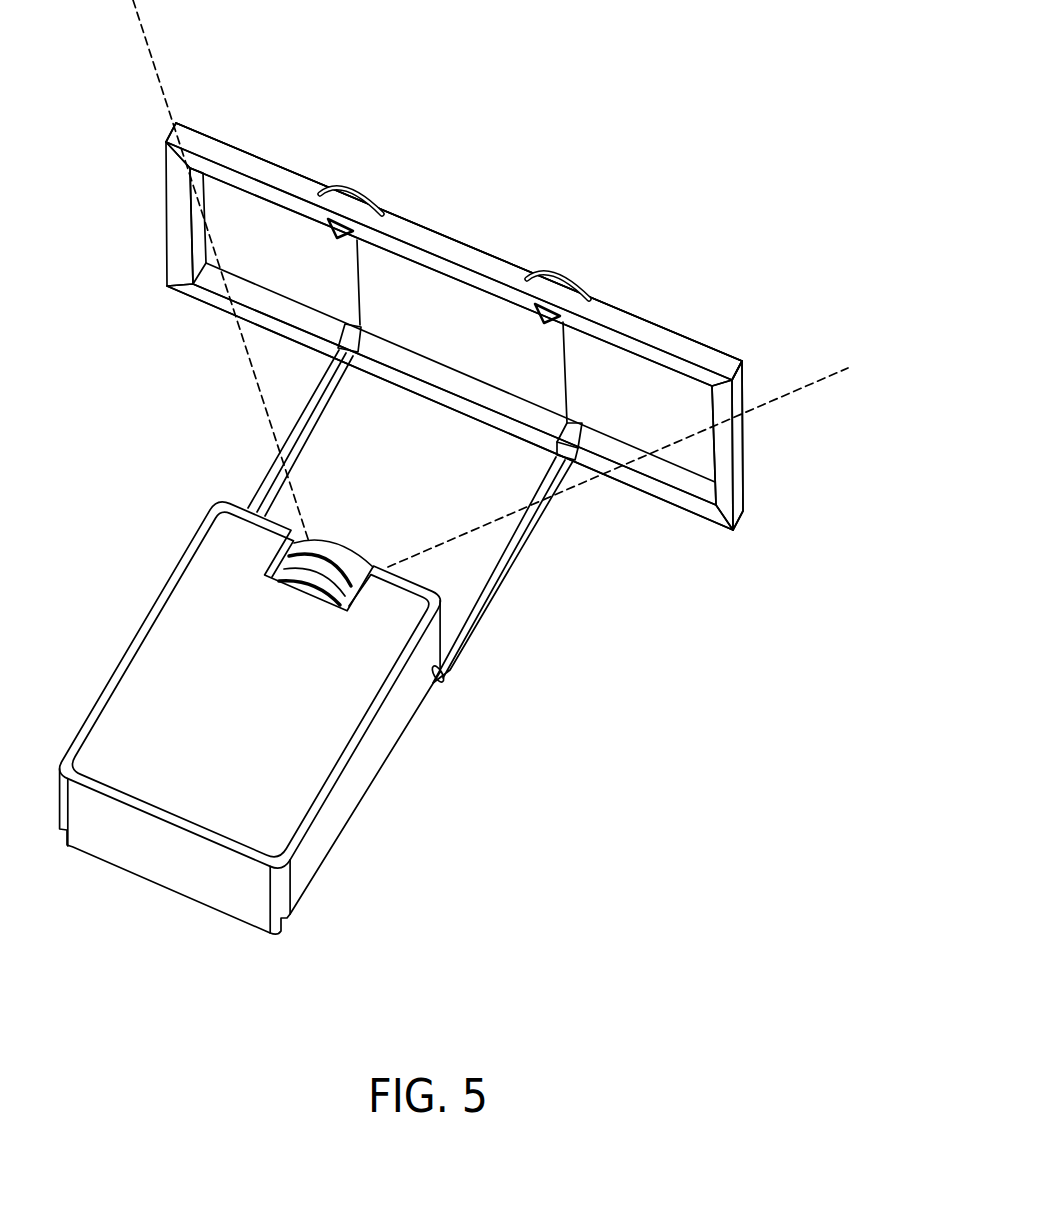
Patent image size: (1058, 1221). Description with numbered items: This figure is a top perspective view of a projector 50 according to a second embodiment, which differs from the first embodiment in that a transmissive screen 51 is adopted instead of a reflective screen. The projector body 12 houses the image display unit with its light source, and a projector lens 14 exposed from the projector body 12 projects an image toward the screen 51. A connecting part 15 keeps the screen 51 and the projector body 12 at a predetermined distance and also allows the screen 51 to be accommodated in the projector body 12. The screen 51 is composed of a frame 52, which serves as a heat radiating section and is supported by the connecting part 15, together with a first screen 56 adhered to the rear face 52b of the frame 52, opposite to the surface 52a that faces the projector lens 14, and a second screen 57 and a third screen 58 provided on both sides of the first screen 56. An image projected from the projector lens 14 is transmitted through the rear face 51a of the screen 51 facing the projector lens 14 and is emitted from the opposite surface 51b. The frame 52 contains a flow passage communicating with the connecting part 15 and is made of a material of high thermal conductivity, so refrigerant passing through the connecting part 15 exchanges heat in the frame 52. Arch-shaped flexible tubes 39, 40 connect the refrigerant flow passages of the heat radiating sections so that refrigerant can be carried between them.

The projector 50 is at (529, 76).
The frame 52 is at (168, 124).
The surface 52a is at (178, 205).
The rear face 52b is at (248, 148).
The transmissive screen 51 is at (478, 248).
The rear face 51a is at (230, 226).
The surface 51b is at (421, 218).
The third screen 58 is at (245, 270).
The first screen 56 is at (448, 350).
The second screen 57 is at (696, 455).
The flexible tube 40 is at (342, 218).
The flexible tube 39 is at (549, 304).
The connecting part 15 is at (294, 437).
The projector lens 14 is at (330, 543).
The projector body 12 is at (380, 745).